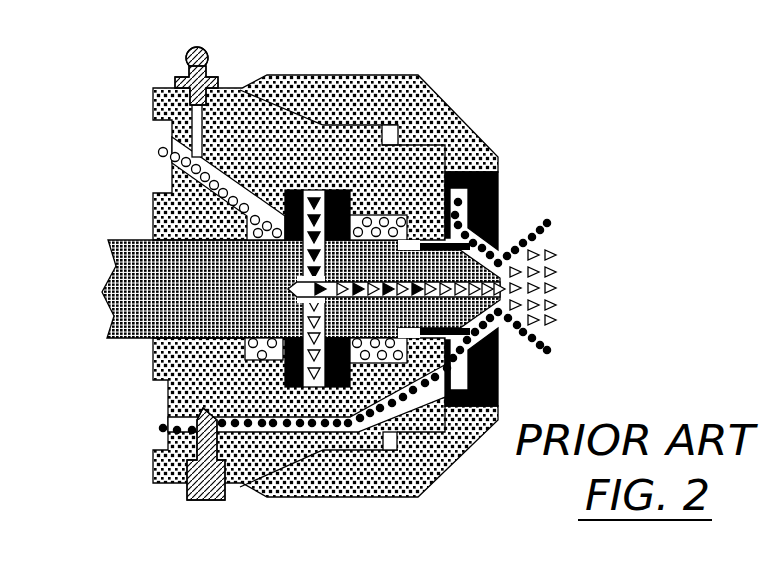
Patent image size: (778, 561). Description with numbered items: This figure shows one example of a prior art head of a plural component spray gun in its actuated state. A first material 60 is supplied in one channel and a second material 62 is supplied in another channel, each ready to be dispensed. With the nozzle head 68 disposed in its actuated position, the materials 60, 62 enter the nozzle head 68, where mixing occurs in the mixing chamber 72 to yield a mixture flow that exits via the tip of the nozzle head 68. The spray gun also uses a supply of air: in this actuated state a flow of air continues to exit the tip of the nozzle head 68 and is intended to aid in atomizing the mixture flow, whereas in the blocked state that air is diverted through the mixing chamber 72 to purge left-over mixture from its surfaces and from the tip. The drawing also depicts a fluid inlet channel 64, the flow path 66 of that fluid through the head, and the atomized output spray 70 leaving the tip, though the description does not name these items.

The material 60 is at (317, 203).
The material 62 is at (317, 377).
The cooling fluid inlet channel 64 is at (160, 152).
The cooling fluid flow path 66 is at (523, 243).
The nozzle head 68 is at (500, 188).
The output spray 70 is at (552, 287).
The mixing chamber 72 is at (378, 283).